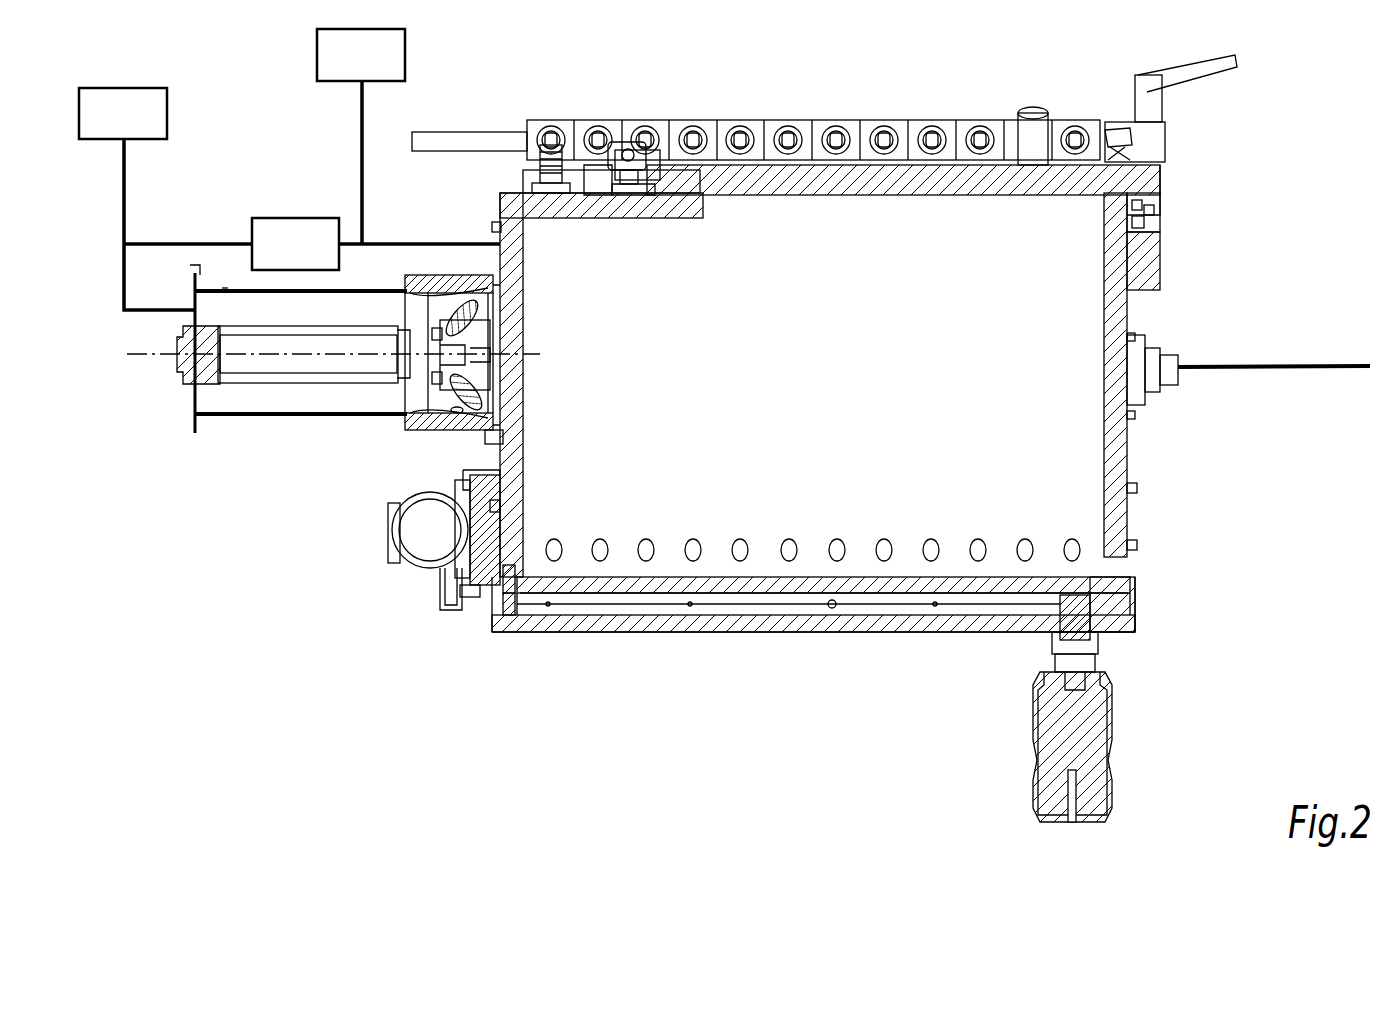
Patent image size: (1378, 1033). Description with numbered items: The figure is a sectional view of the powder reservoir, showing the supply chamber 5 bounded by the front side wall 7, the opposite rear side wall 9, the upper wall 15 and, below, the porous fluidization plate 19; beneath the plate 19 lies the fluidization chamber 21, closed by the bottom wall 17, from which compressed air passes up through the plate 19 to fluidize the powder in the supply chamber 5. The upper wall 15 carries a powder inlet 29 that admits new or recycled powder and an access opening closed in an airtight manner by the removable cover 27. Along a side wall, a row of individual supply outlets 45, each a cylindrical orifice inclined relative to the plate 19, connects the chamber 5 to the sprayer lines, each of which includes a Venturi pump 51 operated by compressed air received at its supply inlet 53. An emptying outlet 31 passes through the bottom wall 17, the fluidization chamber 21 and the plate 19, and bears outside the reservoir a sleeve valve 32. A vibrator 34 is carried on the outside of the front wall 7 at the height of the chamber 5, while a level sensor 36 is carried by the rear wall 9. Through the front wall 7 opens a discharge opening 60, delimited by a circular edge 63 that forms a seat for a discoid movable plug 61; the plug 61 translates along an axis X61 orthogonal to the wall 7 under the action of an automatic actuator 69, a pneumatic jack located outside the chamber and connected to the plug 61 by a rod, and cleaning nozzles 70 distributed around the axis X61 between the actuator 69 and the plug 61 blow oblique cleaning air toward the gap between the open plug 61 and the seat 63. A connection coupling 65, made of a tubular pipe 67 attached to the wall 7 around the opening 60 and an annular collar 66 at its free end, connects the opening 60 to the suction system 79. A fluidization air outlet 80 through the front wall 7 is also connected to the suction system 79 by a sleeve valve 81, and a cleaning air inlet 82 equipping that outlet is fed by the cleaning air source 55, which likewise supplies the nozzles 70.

The supply chamber 5 is at (814, 401).
The front side wall 7 is at (500, 468).
The rear side wall 9 is at (1135, 315).
The upper wall 15 is at (592, 205).
The bottom wall 17 is at (800, 635).
The plate 19 is at (890, 600).
The fluidization chamber 21 is at (722, 612).
The removable cover 27 is at (905, 175).
The powder inlet 29 is at (555, 125).
The outlet 31 is at (1090, 650).
The valve 32 is at (1070, 735).
The vibrator 34 is at (420, 545).
The sensor 36 is at (1135, 388).
The supply outlet 45 is at (886, 538).
The pump 51 is at (715, 120).
The compressed air supply inlet 53 is at (635, 150).
The cleaning air source 55 is at (361, 136).
The discharge opening 60 is at (545, 390).
The movable plug 61 is at (500, 325).
The edge 63 is at (492, 420).
The connection coupling 65 is at (264, 132).
The annular collar 66 is at (195, 250).
The tubular pipe 67 is at (225, 290).
The automatic actuator 69 is at (275, 385).
The cleaning nozzle 70 is at (478, 306).
The suction system 79 is at (165, 199).
The fluidization air outlet 80 is at (475, 243).
The valve 81 is at (295, 244).
The cleaning air inlet 82 is at (365, 108).
The axis X61 is at (314, 353).